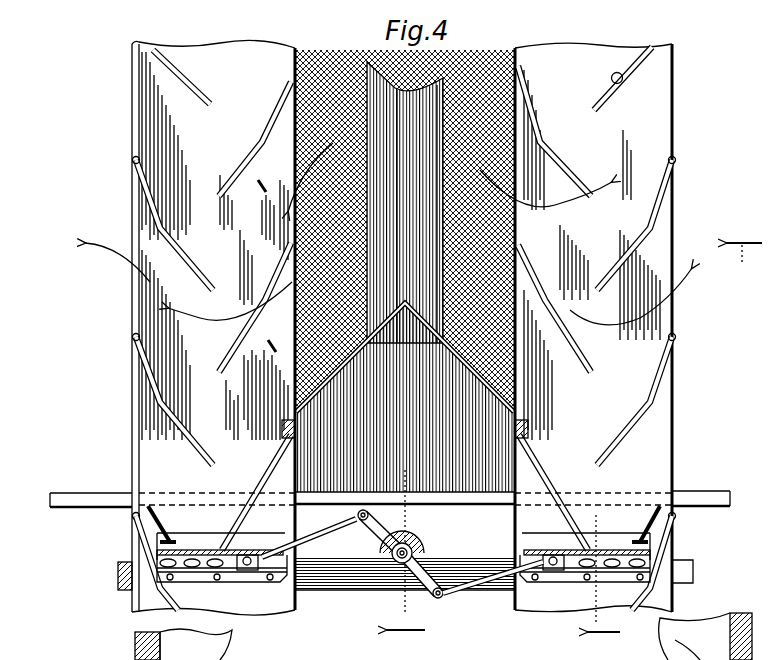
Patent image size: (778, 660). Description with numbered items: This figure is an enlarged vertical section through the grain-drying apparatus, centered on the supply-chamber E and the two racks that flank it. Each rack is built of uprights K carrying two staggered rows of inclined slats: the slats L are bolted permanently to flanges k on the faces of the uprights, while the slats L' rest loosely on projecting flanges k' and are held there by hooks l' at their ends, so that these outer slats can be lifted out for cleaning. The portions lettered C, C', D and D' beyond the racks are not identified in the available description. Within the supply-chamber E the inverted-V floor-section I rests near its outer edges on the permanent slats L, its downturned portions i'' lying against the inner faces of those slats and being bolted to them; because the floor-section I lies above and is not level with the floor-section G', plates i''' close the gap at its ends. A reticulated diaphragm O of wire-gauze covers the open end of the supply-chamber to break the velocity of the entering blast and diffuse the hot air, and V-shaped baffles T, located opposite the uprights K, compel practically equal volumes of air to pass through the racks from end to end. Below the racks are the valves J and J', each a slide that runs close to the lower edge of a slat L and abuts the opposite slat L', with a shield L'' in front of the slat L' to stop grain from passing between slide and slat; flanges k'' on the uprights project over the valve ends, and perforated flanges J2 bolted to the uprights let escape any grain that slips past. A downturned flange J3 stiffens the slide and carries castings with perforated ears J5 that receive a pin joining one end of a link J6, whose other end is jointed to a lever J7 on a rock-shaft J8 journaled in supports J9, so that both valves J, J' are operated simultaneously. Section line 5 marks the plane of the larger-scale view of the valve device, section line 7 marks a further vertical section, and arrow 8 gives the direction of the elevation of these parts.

The left chamber C is at (213, 316).
The right chamber C' is at (593, 315).
The left wall D is at (95, 125).
The right wall D' is at (702, 125).
The supply-chamber E is at (331, 33).
The upright K is at (345, 398).
The slat L is at (405, 219).
The slat L' is at (407, 314).
The shield L'' is at (404, 498).
The hook l' is at (400, 384).
The flange k is at (228, 420).
The flange k' is at (400, 308).
The flange k'' is at (216, 522).
The reticulated diaphragm O is at (448, 258).
The baffle T is at (405, 202).
The floor-section I is at (405, 397).
The downturned portion i'' is at (405, 479).
The plate i''' is at (429, 418).
The floor-section G' is at (390, 479).
The valve J is at (202, 550).
The valve J' is at (606, 546).
The flange J2 is at (175, 568).
The downturned flange J3 is at (222, 570).
The ear J5 is at (256, 572).
The link J6 is at (318, 520).
The lever J7 is at (386, 530).
The rock-shaft J8 is at (422, 547).
The support J9 is at (458, 568).
The section line 5 is at (603, 576).
The section line 7 is at (405, 617).
The arrow 8 is at (744, 242).